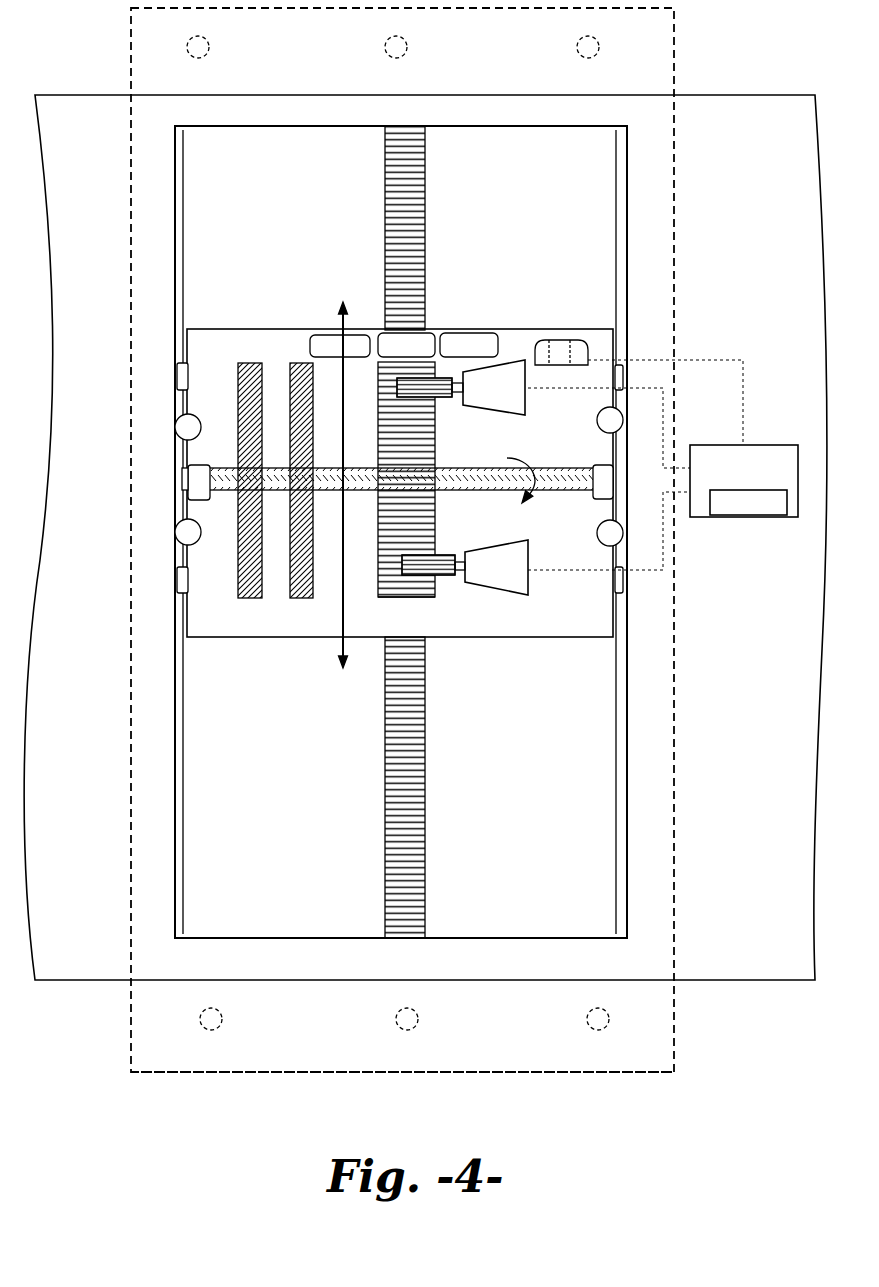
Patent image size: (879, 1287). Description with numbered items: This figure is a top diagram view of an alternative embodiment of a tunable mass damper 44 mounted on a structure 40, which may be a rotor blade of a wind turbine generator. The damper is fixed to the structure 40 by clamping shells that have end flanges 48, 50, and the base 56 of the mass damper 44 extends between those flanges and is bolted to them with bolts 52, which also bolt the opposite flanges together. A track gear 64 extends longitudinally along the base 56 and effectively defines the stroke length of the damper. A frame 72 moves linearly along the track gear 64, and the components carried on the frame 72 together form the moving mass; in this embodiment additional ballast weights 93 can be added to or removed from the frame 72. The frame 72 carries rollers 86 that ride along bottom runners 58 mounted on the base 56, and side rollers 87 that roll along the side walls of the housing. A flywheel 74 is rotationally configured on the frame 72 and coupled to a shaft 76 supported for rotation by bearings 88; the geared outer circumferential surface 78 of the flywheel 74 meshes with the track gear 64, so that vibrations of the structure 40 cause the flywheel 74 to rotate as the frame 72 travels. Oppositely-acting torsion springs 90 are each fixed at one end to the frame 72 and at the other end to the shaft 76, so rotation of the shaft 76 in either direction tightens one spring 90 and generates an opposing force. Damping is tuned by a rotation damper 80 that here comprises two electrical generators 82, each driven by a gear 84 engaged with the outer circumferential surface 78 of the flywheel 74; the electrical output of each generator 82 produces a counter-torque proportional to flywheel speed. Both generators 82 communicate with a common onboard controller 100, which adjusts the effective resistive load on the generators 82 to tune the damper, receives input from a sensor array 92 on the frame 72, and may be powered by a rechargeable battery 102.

The structure 40 is at (98, 172).
The mass damper 44 is at (717, 246).
The end flange 48 is at (503, 65).
The end flange 50 is at (323, 1047).
The bolts 52 is at (209, 47).
The base 56 is at (283, 212).
The bottom runners 58 is at (183, 745).
The track gear 64 is at (410, 200).
The frame 72 is at (228, 631).
The flywheel 74 is at (437, 512).
The shaft 76 is at (563, 470).
The geared outer circumferential surface 78 is at (393, 600).
The rotation damper 80 is at (486, 521).
The electrical generator 82 is at (487, 392).
The gear 84 is at (440, 398).
The rollers 86 is at (175, 378).
The side rollers 87 is at (180, 533).
The bearings 88 is at (190, 478).
The torsion springs 90 is at (247, 363).
The sensor array 92 is at (567, 345).
The ballast weights 93 is at (477, 342).
The controller 100 is at (767, 445).
The rechargeable battery 102 is at (738, 512).